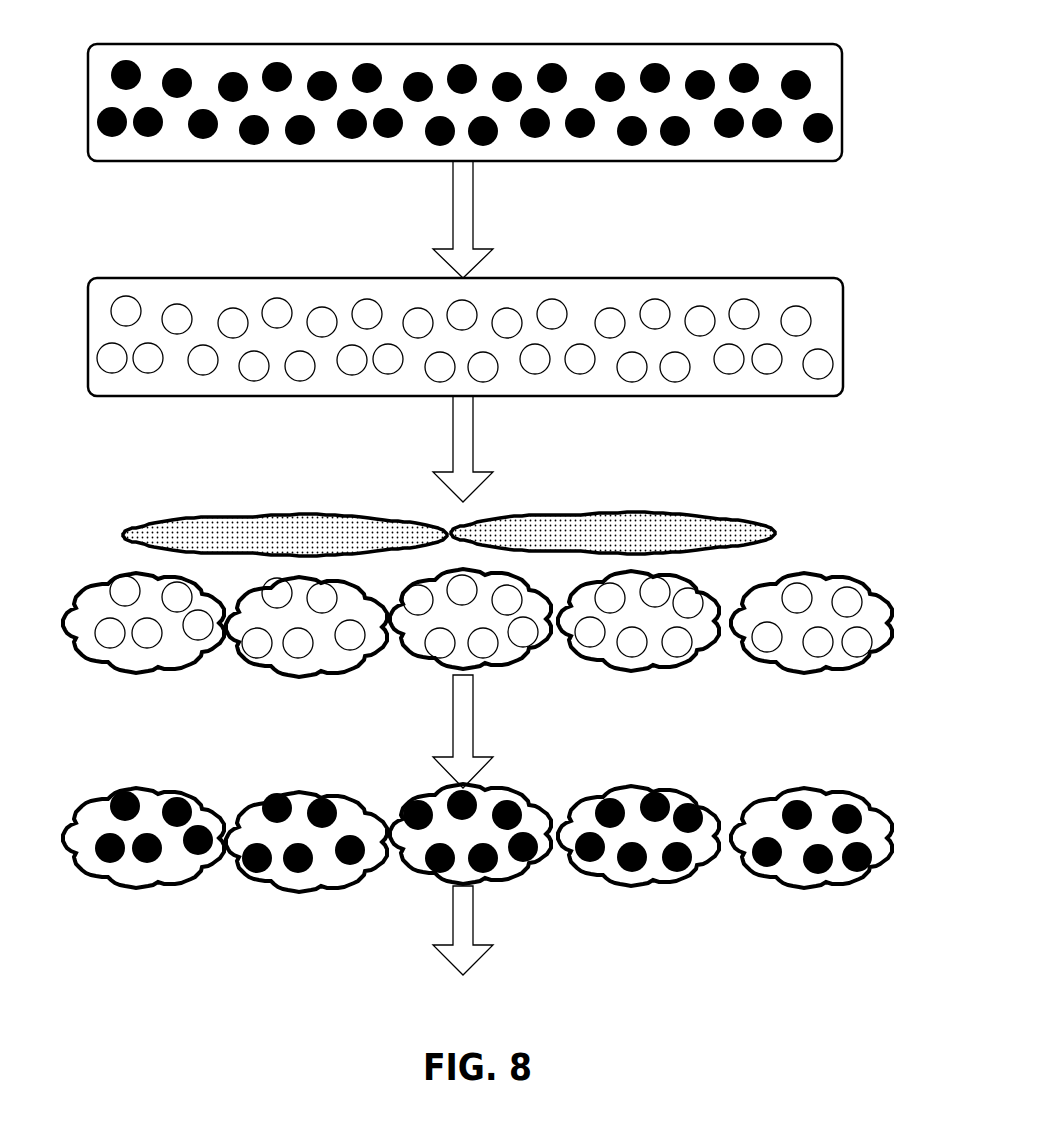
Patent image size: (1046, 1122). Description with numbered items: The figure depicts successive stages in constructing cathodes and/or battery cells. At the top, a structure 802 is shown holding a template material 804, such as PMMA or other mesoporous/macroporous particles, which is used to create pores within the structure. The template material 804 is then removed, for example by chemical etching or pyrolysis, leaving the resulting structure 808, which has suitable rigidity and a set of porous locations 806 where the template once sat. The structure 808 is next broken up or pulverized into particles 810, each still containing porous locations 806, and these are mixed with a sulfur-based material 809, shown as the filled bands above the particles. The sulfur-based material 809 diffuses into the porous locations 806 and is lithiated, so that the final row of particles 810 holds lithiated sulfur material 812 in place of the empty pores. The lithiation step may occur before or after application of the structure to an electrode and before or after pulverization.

The structure 802 is at (842, 47).
The template material 804 is at (750, 69).
The resulting structure 808 is at (836, 288).
The porous locations 806 is at (749, 316).
The sulfur-based material 809 is at (748, 522).
The particles 810 is at (884, 600).
The lithiated sulfur material 812 is at (777, 850).